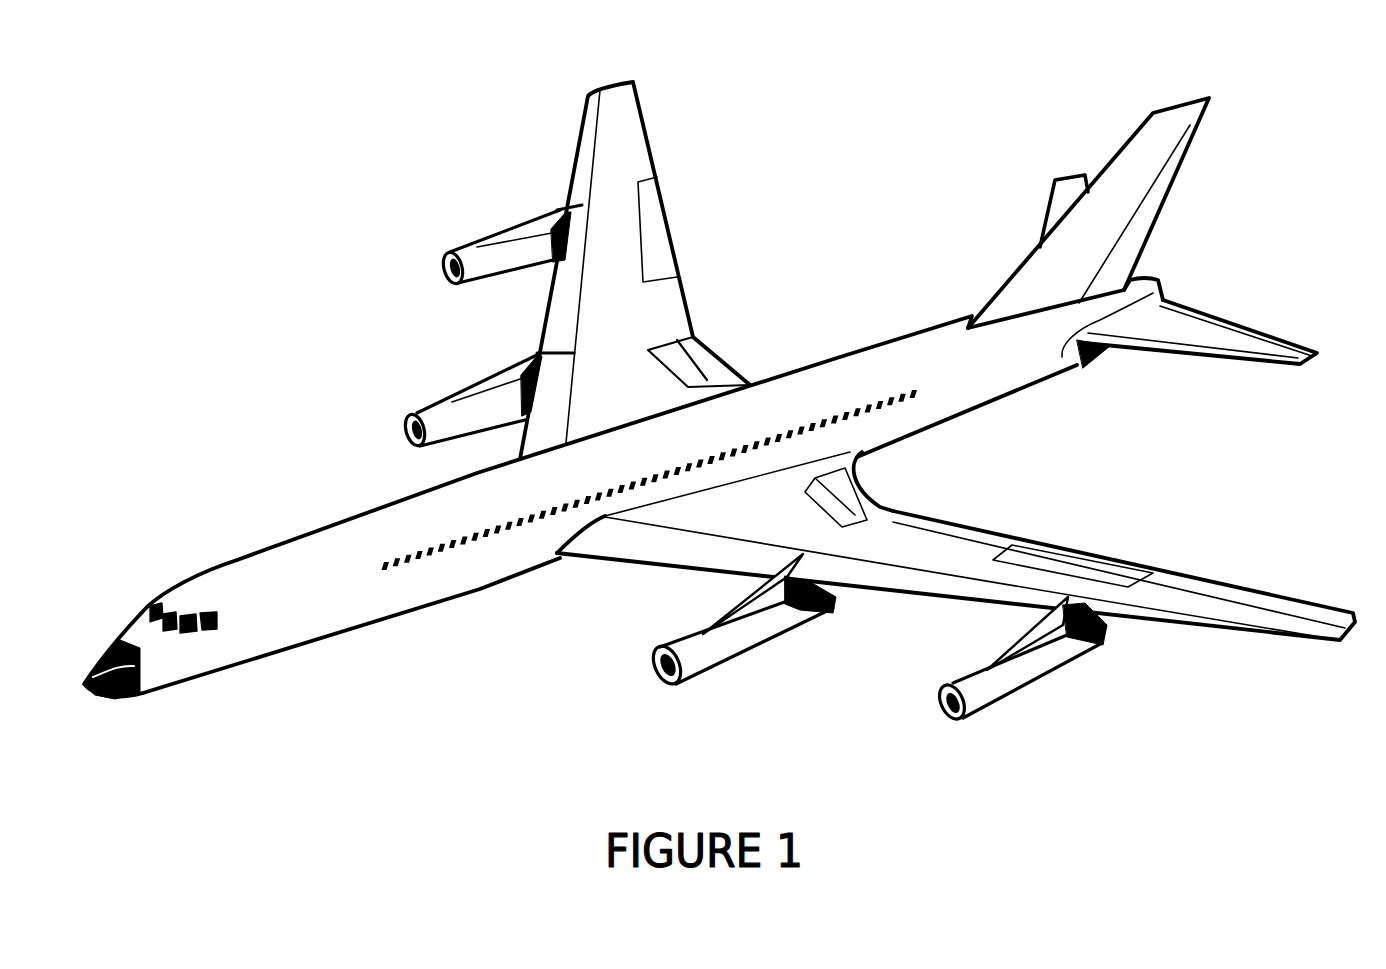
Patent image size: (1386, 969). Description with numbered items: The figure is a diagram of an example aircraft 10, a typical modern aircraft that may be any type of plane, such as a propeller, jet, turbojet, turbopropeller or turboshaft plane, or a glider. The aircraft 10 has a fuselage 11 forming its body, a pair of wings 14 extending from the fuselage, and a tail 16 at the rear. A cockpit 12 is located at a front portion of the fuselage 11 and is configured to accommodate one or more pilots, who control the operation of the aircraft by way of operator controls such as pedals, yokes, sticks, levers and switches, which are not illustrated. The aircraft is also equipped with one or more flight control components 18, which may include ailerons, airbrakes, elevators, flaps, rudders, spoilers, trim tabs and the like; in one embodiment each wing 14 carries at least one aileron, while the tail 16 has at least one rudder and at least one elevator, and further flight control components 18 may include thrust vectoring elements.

The aircraft 10 is at (177, 193).
The fuselage 11 is at (465, 637).
The cockpit 12 is at (150, 583).
The wings 14 is at (553, 160).
The tail 16 is at (1110, 137).
The flight control component 18 is at (733, 347).